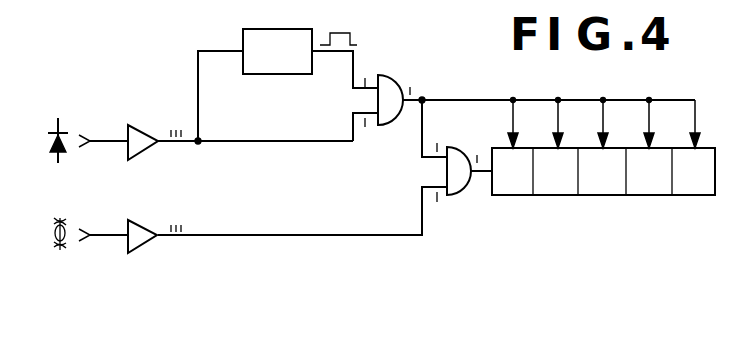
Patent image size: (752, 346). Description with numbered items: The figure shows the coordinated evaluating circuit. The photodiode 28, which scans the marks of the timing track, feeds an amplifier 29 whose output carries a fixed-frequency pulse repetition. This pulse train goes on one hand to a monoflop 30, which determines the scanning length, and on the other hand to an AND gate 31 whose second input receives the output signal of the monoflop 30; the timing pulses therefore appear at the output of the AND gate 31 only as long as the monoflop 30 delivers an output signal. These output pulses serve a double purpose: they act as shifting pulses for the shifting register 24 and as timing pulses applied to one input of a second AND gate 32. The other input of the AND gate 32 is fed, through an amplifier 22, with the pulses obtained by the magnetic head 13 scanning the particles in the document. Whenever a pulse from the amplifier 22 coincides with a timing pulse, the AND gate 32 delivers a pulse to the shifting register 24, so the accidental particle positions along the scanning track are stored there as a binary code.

The magnetic head 13 is at (60, 251).
The amplifier 22 is at (143, 242).
The shifting register 24 is at (658, 195).
The photodiode 28 is at (56, 125).
The amplifier 29 is at (140, 127).
The monoflop 30 is at (279, 75).
The AND gate 31 is at (388, 74).
The AND gate 32 is at (458, 196).